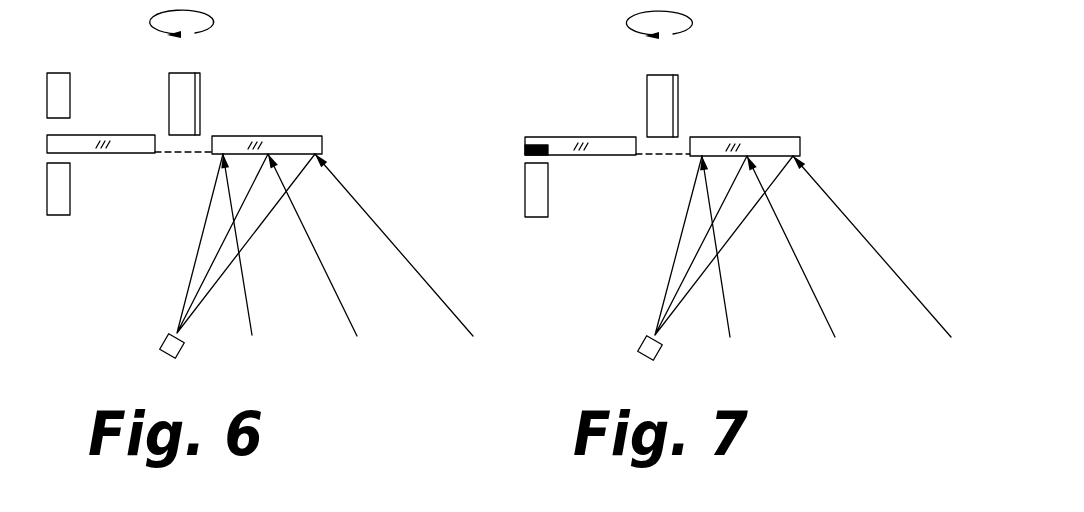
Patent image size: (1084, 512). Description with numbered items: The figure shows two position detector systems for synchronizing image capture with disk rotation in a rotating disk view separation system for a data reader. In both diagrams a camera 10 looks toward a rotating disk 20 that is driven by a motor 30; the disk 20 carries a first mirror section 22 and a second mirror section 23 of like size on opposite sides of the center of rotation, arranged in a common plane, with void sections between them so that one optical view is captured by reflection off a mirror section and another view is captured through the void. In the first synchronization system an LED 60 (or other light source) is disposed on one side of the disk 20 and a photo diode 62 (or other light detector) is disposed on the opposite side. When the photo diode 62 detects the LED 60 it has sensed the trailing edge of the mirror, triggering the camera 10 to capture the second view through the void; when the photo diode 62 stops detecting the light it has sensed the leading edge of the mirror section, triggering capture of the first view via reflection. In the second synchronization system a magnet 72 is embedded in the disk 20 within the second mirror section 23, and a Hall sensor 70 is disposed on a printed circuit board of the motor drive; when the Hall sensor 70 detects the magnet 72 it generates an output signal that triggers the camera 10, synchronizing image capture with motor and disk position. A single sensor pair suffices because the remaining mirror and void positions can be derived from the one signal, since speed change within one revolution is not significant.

In FIG. 6, the camera 10 is at (160, 348).
In FIG. 7, the camera 10 is at (638, 348).
In FIG. 6, the rotating disk 20 is at (220, 136).
In FIG. 7, the rotating disk 20 is at (666, 138).
In FIG. 6, the first mirror section 22 is at (295, 136).
In FIG. 7, the first mirror section 22 is at (770, 137).
In FIG. 6, the second mirror section 23 is at (135, 153).
In FIG. 7, the second mirror section 23 is at (617, 155).
In FIG. 6, the motor 30 is at (200, 98).
In FIG. 7, the motor 30 is at (678, 100).
In FIG. 6, the LED 60 is at (70, 200).
In FIG. 6, the photo diode 62 is at (70, 87).
In FIG. 7, the Hall sensor 70 is at (525, 195).
In FIG. 7, the magnet 72 is at (525, 150).